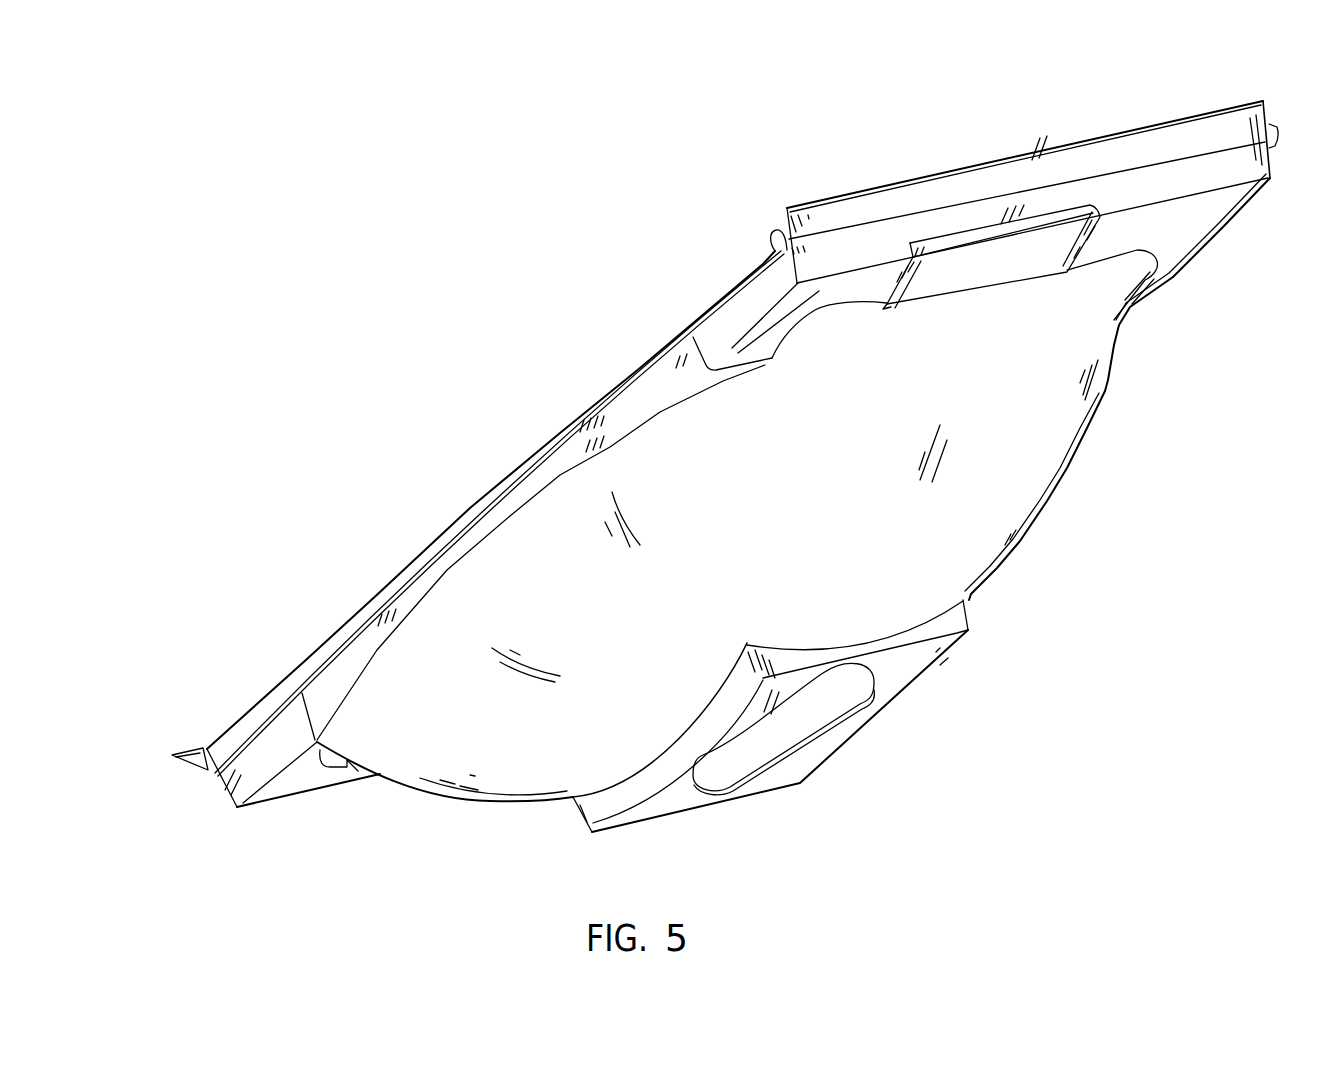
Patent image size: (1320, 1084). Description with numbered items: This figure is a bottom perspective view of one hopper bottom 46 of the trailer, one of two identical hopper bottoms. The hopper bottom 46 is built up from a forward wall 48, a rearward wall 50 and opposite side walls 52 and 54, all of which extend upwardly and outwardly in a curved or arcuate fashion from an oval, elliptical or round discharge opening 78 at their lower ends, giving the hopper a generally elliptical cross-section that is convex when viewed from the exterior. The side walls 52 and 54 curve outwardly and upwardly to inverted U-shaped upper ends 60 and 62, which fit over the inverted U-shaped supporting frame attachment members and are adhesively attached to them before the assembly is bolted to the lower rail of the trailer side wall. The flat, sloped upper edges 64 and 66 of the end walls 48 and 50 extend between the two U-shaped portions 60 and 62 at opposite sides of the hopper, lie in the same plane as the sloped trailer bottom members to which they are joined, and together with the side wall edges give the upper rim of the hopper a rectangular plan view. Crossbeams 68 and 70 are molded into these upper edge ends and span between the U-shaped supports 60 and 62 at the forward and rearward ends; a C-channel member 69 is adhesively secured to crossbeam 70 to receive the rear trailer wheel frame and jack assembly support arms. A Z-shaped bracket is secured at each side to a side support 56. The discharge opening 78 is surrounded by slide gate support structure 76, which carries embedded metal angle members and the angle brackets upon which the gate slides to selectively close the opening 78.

The hopper bottom 46 is at (566, 371).
The forward wall 48 is at (894, 452).
The rearward wall 50 is at (480, 803).
The side wall 52 is at (1052, 508).
The side wall 54 is at (560, 632).
The side support 56 is at (744, 319).
The inverted U-shaped upper end 60 is at (1280, 126).
The inverted U-shaped upper end 62 is at (770, 237).
The end wall edge 64 is at (1013, 168).
The end wall edge 66 is at (186, 760).
The crossbeam 68 is at (967, 226).
The C-channel member 69 is at (1045, 257).
The crossbeam 70 is at (345, 785).
The slide gate support structure 76 is at (908, 658).
The discharge opening 78 is at (794, 724).